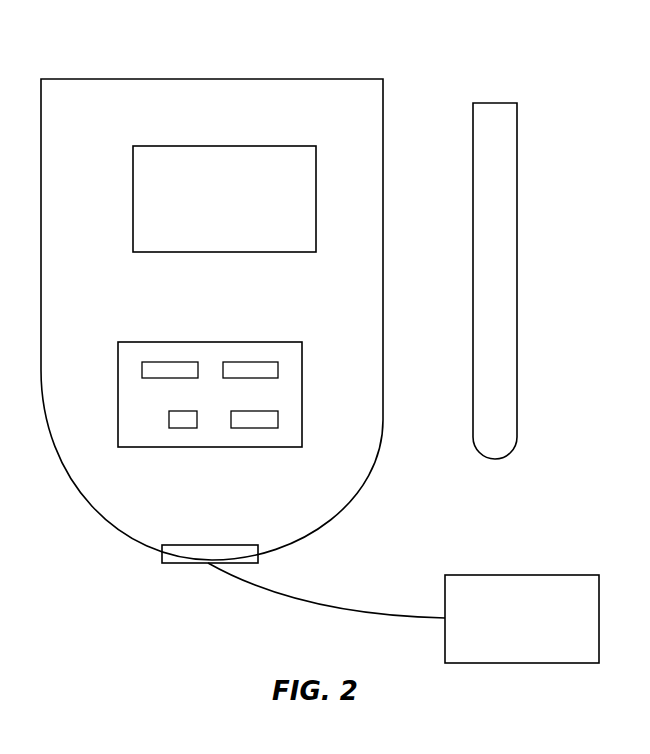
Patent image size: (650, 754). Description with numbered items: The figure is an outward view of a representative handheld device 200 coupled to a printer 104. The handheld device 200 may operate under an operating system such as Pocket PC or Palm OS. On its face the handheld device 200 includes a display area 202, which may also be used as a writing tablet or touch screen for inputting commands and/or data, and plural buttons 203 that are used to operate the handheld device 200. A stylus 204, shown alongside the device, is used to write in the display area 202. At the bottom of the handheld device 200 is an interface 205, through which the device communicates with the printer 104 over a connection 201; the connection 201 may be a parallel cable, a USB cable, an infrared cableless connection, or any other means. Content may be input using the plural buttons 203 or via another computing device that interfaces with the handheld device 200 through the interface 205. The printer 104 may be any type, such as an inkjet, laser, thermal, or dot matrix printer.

The handheld device 200 is at (115, 64).
The display area 202 is at (232, 146).
The plural buttons 203 is at (210, 342).
The stylus 204 is at (499, 103).
The interface 205 is at (178, 565).
The connection 201 is at (330, 604).
The printer 104 is at (522, 575).